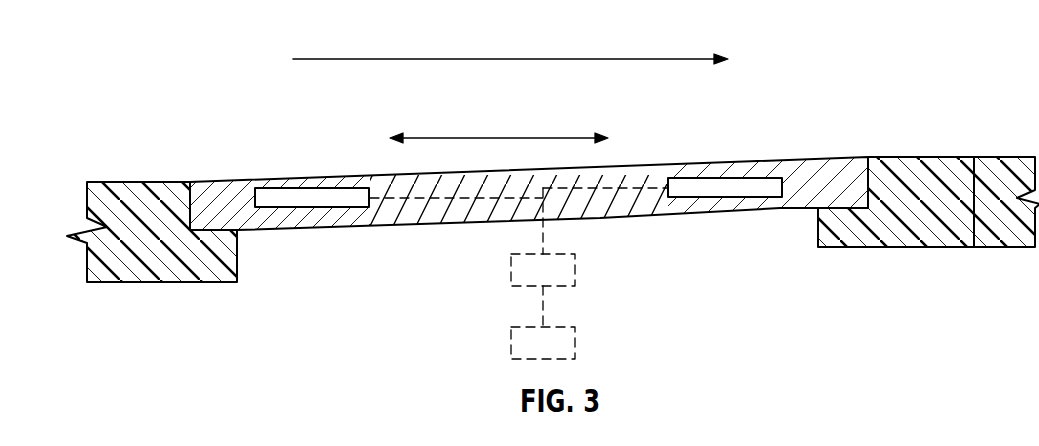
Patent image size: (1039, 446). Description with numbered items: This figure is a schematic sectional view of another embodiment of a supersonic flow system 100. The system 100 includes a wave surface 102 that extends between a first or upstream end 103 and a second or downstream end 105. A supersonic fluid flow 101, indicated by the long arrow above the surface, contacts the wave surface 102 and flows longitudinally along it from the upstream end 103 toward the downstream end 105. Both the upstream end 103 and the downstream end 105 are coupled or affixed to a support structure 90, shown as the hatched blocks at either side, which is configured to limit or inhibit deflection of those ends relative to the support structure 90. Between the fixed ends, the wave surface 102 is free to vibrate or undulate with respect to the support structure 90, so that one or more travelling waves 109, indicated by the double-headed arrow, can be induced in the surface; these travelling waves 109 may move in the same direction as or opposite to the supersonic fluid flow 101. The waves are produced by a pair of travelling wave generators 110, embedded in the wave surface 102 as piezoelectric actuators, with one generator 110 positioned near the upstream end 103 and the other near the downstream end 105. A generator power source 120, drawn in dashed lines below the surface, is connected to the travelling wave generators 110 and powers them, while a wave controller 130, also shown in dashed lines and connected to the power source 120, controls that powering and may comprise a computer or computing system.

The supersonic flow system 100 is at (99, 55).
The supersonic fluid flow 101 is at (382, 57).
The travelling waves 109 is at (506, 138).
The support structure 90 is at (110, 195).
The wave surface 102 is at (787, 212).
The upstream end 103 is at (198, 180).
The downstream end 105 is at (838, 157).
The travelling wave generators 110 is at (300, 192).
The generator power source 120 is at (516, 270).
The wave controller 130 is at (516, 335).